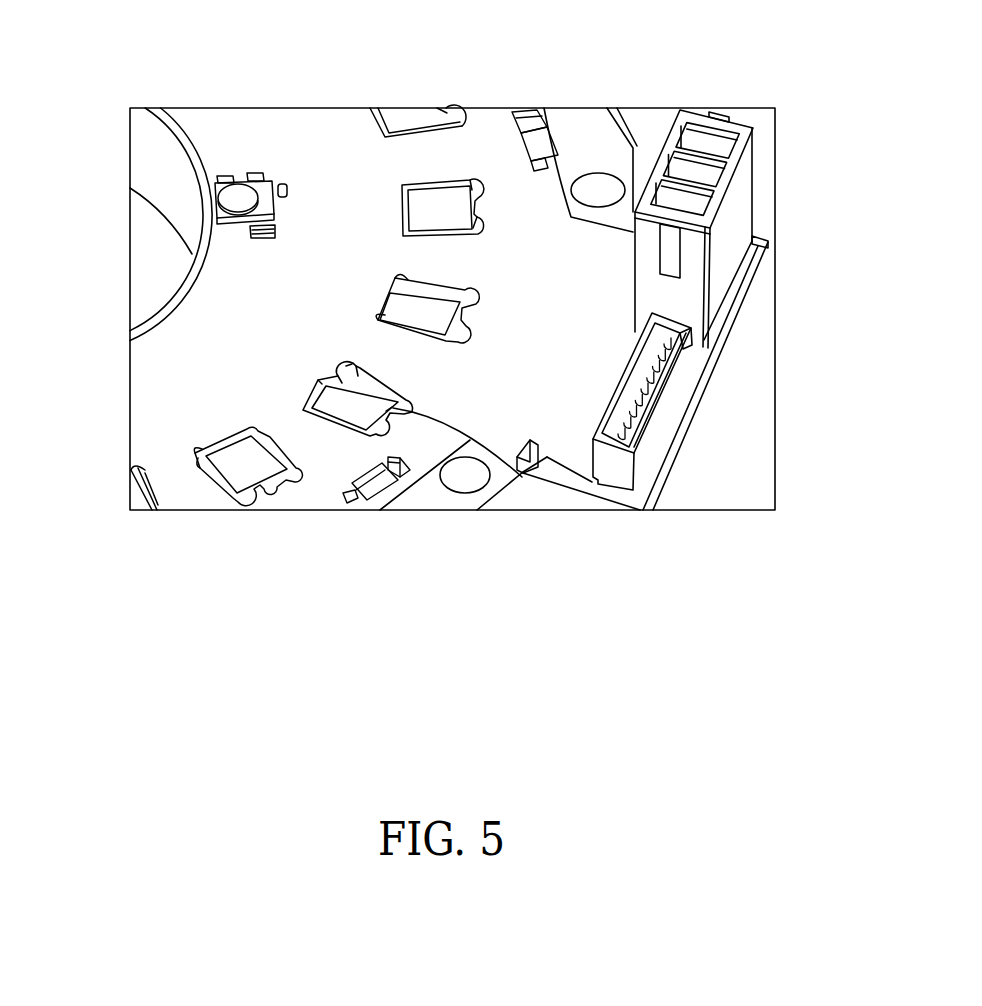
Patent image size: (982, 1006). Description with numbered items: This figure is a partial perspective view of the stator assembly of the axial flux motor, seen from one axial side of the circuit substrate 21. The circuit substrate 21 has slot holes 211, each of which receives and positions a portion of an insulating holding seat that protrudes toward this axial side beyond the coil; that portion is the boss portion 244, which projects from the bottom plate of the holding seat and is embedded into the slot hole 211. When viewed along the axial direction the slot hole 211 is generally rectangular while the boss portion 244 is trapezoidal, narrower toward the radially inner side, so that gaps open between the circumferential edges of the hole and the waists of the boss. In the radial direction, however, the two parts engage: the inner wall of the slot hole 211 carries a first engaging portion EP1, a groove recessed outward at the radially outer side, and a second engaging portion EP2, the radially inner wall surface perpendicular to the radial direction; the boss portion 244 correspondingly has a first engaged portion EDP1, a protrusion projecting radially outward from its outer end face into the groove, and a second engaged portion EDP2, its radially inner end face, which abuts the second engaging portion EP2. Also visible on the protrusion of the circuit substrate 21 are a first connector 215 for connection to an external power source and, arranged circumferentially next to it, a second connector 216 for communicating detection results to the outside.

The circuit substrate 21 is at (527, 225).
The first connector 215 is at (730, 223).
The second connector 216 is at (672, 405).
The slot hole 211 is at (322, 411).
The boss portion 244 is at (340, 410).
The first engaging portion EP1 is at (522, 477).
The second engaging portion EP2 is at (320, 381).
The first engaged portion EDP1 is at (390, 410).
The second engaged portion EDP2 is at (348, 362).